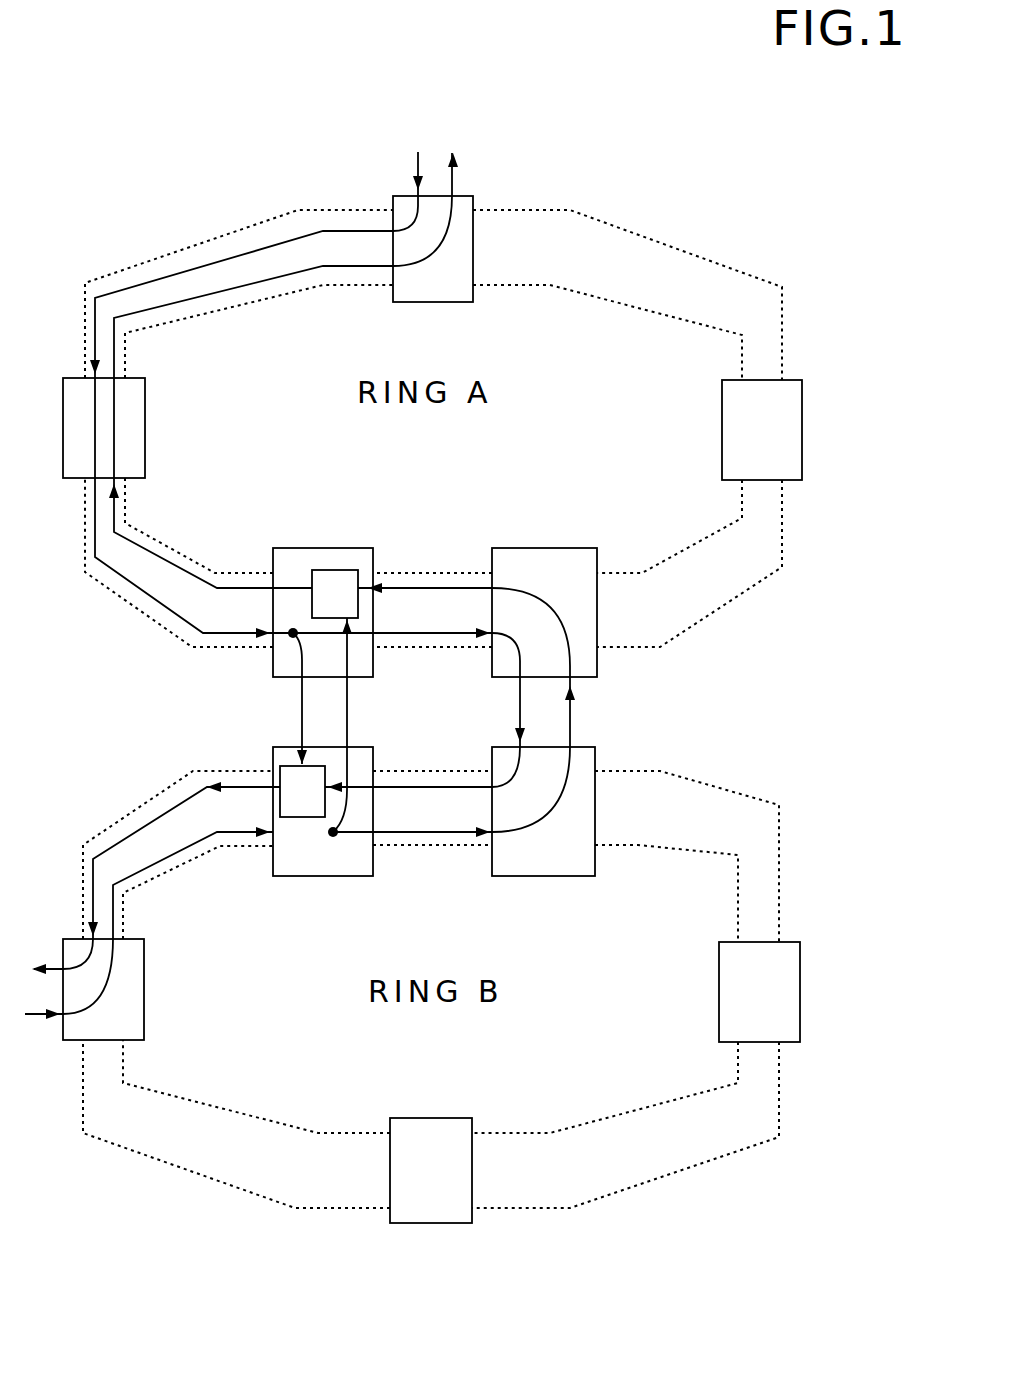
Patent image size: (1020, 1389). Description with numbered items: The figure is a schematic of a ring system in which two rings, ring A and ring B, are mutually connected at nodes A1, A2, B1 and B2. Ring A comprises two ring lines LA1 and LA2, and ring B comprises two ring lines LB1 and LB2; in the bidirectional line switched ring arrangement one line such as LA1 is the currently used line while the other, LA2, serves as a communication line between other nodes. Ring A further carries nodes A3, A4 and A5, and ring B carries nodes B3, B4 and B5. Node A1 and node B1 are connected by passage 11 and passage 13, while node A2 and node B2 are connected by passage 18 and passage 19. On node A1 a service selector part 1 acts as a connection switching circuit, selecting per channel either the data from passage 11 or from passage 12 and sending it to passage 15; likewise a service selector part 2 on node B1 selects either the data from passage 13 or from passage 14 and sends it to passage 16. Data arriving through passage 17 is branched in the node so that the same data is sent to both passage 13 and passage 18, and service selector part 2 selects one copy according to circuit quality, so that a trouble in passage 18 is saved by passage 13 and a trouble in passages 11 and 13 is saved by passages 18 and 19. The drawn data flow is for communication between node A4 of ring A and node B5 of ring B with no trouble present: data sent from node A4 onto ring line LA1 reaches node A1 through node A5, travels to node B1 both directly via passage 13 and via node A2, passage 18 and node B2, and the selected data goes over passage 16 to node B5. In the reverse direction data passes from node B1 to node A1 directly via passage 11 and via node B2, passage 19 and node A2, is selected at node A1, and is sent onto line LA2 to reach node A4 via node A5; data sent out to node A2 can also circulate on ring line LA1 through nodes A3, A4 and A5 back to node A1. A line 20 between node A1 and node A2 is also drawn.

The ring line LA1 is at (667, 248).
The ring line LA2 is at (650, 313).
The ring line LB1 is at (663, 1175).
The ring line LB2 is at (647, 1107).
The node A1 is at (288, 548).
The node A2 is at (552, 548).
The node A3 is at (722, 427).
The node A4 is at (433, 302).
The node A5 is at (145, 420).
The node B1 is at (303, 876).
The node B2 is at (515, 876).
The node B3 is at (719, 996).
The node B4 is at (408, 1118).
The node B5 is at (144, 995).
The service selector part 1 is at (342, 570).
The service selector part 2 is at (287, 765).
The passage 11 is at (347, 723).
The passage 12 is at (427, 588).
The passage 13 is at (302, 732).
The passage 14 is at (420, 787).
The passage 15 is at (148, 550).
The passage 16 is at (155, 818).
The passage 17 is at (155, 600).
The passage 18 is at (518, 723).
The passage 19 is at (573, 705).
The path from A1 to A2 20 is at (407, 633).